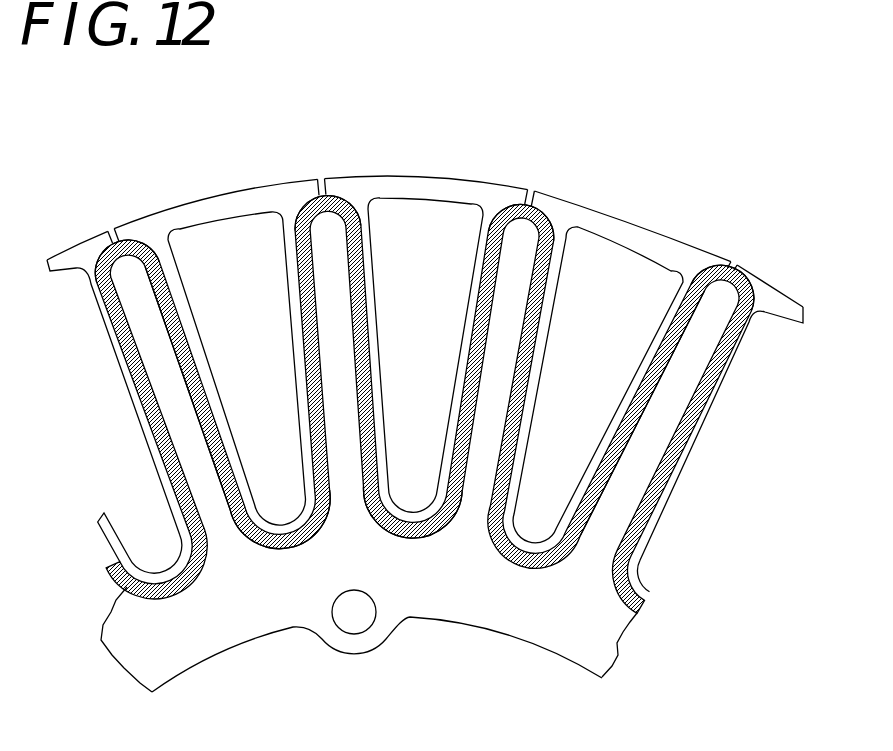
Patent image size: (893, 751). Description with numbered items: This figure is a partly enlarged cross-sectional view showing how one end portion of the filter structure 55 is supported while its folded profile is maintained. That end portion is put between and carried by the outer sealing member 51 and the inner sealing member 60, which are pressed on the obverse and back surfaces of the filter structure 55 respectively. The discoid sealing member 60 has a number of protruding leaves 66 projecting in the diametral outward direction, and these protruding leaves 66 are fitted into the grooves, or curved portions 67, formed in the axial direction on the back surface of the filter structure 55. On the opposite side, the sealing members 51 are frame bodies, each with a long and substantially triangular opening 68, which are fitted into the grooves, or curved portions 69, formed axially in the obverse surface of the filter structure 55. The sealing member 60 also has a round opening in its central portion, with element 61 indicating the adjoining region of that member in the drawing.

The outer sealing member 51 is at (210, 212).
The filter structure 55 is at (493, 297).
The inner sealing member 60 is at (600, 633).
The yoke inner periphery 61 is at (430, 618).
The protruding leaves 66 is at (340, 360).
The curved portions 67 is at (310, 195).
The triangular opening 68 is at (205, 352).
The curved portions 69 is at (298, 557).